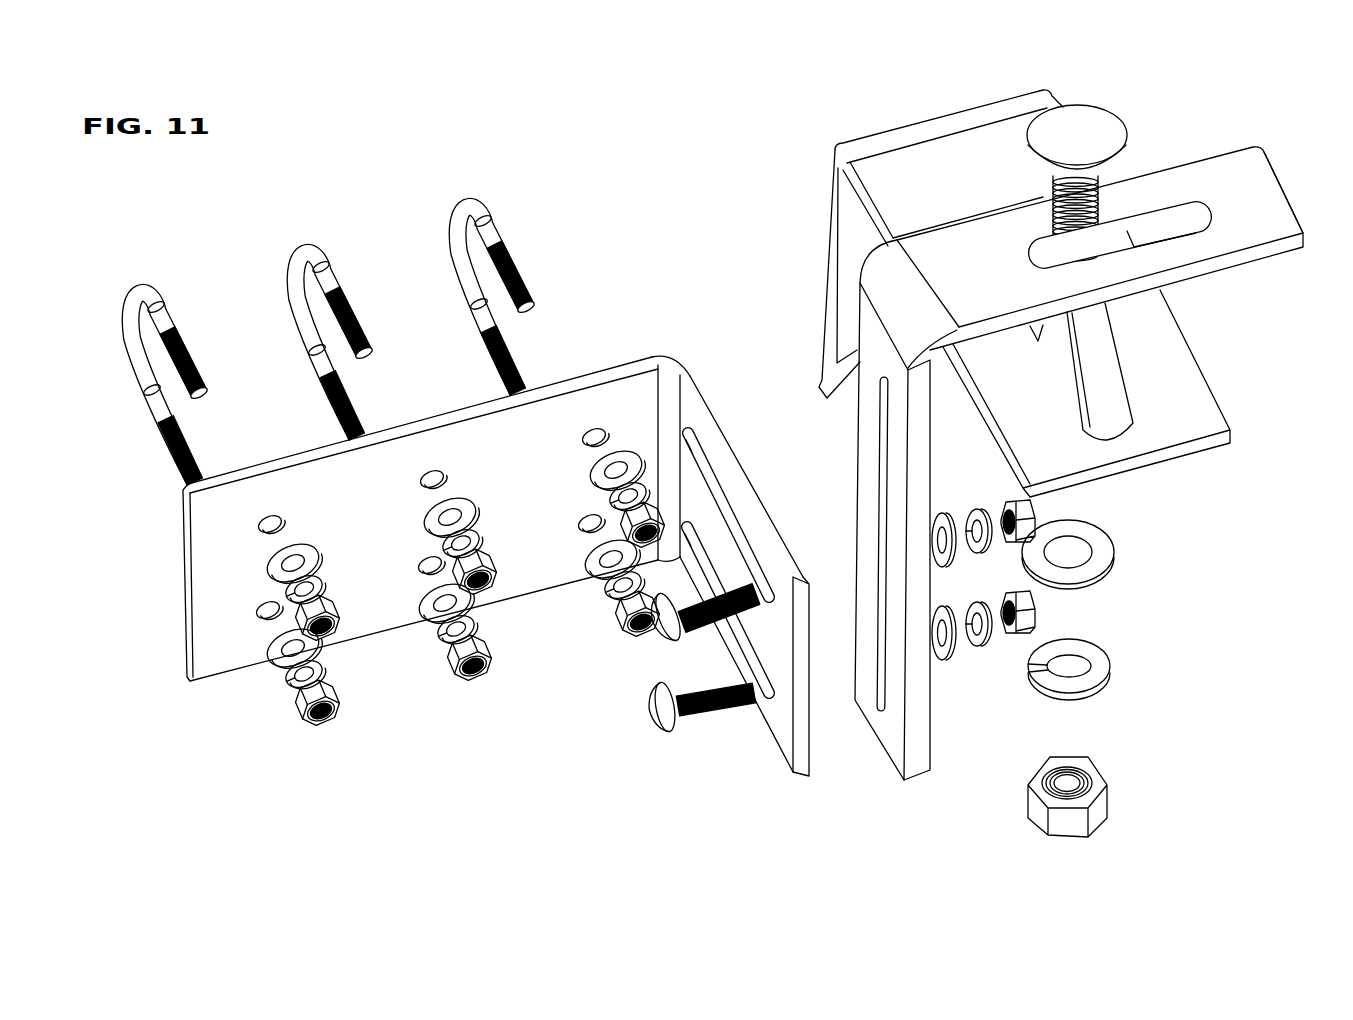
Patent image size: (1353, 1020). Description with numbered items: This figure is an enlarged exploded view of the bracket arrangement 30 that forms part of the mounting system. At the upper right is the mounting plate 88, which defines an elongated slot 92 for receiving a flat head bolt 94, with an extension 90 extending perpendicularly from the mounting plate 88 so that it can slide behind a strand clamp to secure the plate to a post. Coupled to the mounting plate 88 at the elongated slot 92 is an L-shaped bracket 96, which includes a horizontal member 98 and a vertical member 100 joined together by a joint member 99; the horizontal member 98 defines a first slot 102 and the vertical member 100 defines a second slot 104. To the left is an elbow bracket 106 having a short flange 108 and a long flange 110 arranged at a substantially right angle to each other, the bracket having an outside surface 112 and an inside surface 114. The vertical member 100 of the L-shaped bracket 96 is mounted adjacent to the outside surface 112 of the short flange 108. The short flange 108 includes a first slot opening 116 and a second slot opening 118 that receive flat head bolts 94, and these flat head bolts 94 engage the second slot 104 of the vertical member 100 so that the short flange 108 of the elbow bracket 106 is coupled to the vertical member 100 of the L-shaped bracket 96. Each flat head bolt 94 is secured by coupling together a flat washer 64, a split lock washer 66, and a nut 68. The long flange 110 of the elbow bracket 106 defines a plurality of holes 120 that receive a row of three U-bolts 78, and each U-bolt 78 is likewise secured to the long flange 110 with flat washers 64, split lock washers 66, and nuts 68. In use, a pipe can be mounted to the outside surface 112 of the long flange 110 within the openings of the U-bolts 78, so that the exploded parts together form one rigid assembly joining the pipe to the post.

The bracket arrangement 30 is at (1017, 430).
The flat washer 64 is at (310, 537).
The split lock washer 66 is at (318, 577).
The nut 68 is at (340, 617).
The U-bolt 78 is at (146, 287).
The mounting plate 88 is at (938, 143).
The extension 90 is at (835, 282).
The elongated slot 92 is at (1100, 410).
The flat head bolt 94 is at (662, 645).
The L-shaped bracket 96 is at (1106, 192).
The horizontal member 98 is at (1268, 180).
The joint member 99 is at (875, 282).
The vertical member 100 is at (886, 537).
The first slot 102 is at (1169, 215).
The second slot 104 is at (882, 710).
The elbow bracket 106 is at (512, 541).
The short flange 108 is at (716, 410).
The long flange 110 is at (584, 393).
The outside surface 112 is at (273, 452).
The inside surface 114 is at (213, 660).
The first slot opening 116 is at (720, 503).
The second slot opening 118 is at (736, 662).
The hole 120 is at (277, 523).